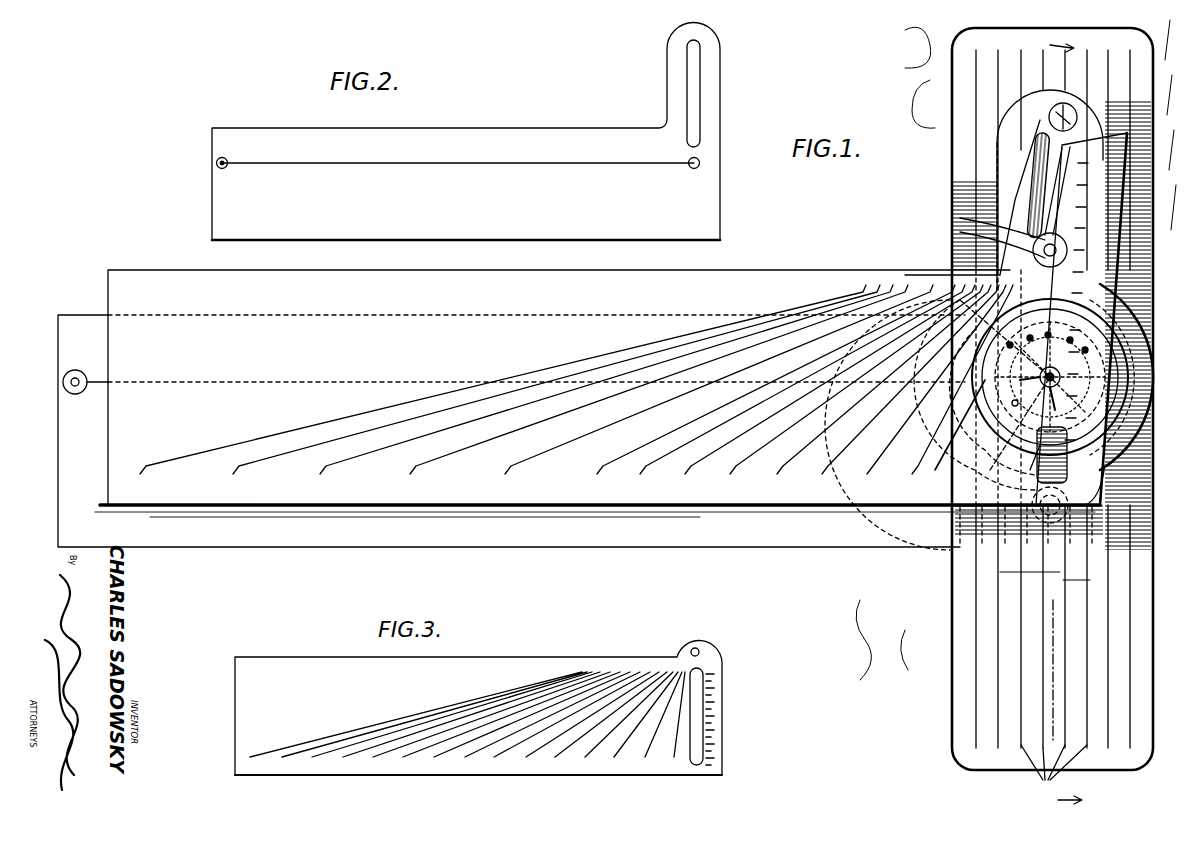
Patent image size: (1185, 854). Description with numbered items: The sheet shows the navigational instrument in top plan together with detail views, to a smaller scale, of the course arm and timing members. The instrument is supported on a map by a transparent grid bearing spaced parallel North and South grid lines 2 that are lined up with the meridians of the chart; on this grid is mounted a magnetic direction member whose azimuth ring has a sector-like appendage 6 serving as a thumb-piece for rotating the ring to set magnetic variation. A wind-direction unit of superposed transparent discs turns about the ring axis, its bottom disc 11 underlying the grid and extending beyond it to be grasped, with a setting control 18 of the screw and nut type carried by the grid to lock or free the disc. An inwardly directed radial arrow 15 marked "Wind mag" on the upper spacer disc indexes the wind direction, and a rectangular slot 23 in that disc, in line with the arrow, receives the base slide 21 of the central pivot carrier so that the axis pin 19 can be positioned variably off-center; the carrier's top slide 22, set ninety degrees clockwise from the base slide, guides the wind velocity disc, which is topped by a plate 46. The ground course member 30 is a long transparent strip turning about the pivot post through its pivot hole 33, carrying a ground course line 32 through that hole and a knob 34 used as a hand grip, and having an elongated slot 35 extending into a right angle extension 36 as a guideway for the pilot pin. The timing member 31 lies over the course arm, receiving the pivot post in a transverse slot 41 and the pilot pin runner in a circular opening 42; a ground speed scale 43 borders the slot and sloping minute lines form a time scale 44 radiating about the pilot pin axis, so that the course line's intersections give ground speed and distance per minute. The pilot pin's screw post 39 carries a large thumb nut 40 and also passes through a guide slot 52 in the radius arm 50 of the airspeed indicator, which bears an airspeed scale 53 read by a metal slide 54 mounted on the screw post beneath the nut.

In FIG. 1, the North and South grid lines 2 is at (1054, 772).
In FIG. 1, the sector-like appendage 6 is at (930, 253).
In FIG. 1, the bottom disc 11 is at (1160, 372).
In FIG. 1, the radial arrow 15 is at (952, 432).
In FIG. 1, the setting control 18 is at (1038, 514).
In FIG. 1, the axis pin 19 is at (1030, 388).
In FIG. 1, the base slide 21 is at (1047, 373).
In FIG. 1, the top slide 22 is at (1050, 377).
In FIG. 1, the rectangular slot 23 is at (1030, 432).
In FIG. 2, the ground course member 30 is at (462, 140).
In FIG. 1, the ground course member 30 is at (62, 450).
In FIG. 3, the timing member 31 is at (298, 657).
In FIG. 1, the timing member 31 is at (122, 300).
In FIG. 2, the ground course line 32 is at (487, 162).
In FIG. 1, the ground course line 32 is at (220, 381).
In FIG. 2, the pivot hole 33 is at (691, 169).
In FIG. 2, the knob 34 is at (226, 160).
In FIG. 1, the knob 34 is at (63, 382).
In FIG. 2, the elongated slot 35 is at (698, 82).
In FIG. 1, the elongated slot 35 is at (1037, 140).
In FIG. 2, the right angle extension 36 is at (667, 66).
In FIG. 1, the right angle extension 36 is at (1010, 162).
In FIG. 1, the screw post 39 is at (960, 218).
In FIG. 1, the thumb nut 40 is at (960, 232).
In FIG. 3, the transverse slot 41 is at (693, 763).
In FIG. 1, the transverse slot 41 is at (1020, 484).
In FIG. 3, the circular opening 42 is at (700, 649).
In FIG. 3, the ground speed scale 43 is at (722, 724).
In FIG. 1, the ground speed scale 43 is at (1026, 527).
In FIG. 3, the time scale 44 is at (368, 731).
In FIG. 1, the time scale 44 is at (575, 378).
In FIG. 1, the plate 46 is at (980, 380).
In FIG. 1, the radius arm 50 is at (1063, 117).
In FIG. 1, the guide slot 52 is at (1105, 135).
In FIG. 1, the airspeed scale 53 is at (1115, 150).
In FIG. 1, the metal slide 54 is at (1034, 232).